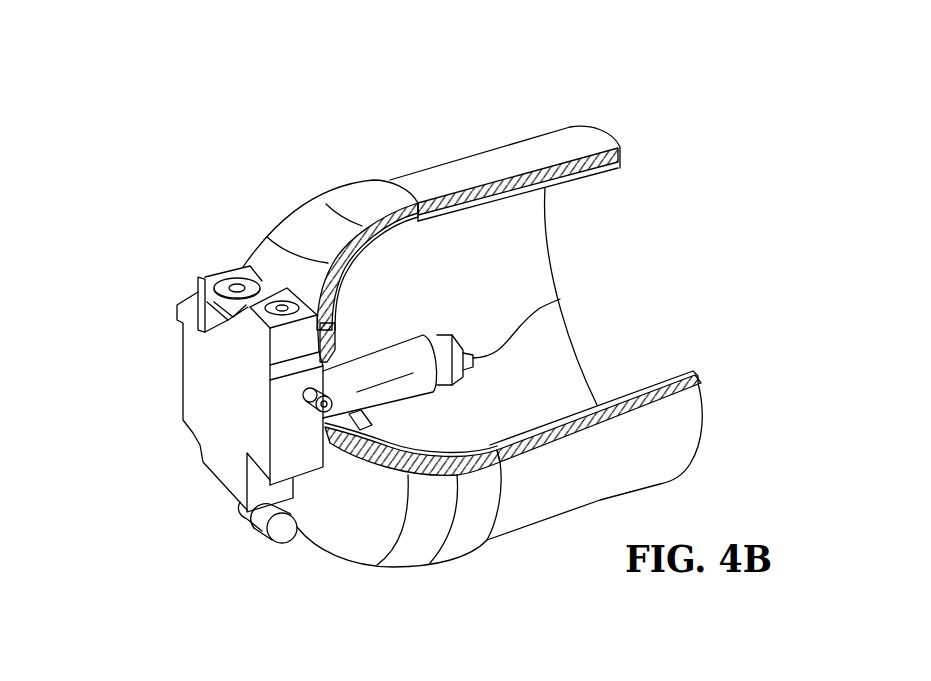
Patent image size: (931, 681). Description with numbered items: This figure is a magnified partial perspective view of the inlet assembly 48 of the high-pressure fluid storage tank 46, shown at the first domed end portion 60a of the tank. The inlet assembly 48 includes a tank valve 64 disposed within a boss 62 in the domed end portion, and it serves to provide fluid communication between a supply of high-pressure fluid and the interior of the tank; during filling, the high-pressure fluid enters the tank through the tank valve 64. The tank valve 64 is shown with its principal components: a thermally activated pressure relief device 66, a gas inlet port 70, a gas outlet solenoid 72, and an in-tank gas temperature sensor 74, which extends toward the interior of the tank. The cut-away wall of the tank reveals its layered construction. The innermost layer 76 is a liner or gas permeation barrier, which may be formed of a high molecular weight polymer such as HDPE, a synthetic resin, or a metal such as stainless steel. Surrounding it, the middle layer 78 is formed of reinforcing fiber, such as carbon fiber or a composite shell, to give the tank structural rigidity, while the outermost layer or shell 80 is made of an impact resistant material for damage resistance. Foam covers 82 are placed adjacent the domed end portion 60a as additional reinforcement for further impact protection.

The high-pressure fluid storage tank 46 is at (770, 190).
The first inlet assembly 48 is at (180, 492).
The first domed end portion 60a is at (333, 565).
The boss 62 is at (338, 330).
The tank valve 64 is at (188, 285).
The thermally activated pressure relief device 66 is at (258, 515).
The gas inlet port 70 is at (308, 396).
The gas outlet solenoid 72 is at (233, 285).
The in-tank gas temperature sensor 74 is at (560, 299).
The innermost layer 76 is at (672, 376).
The middle layer 78 is at (623, 148).
The outermost layer or shell 80 is at (497, 158).
The foam cover 82 is at (337, 190).